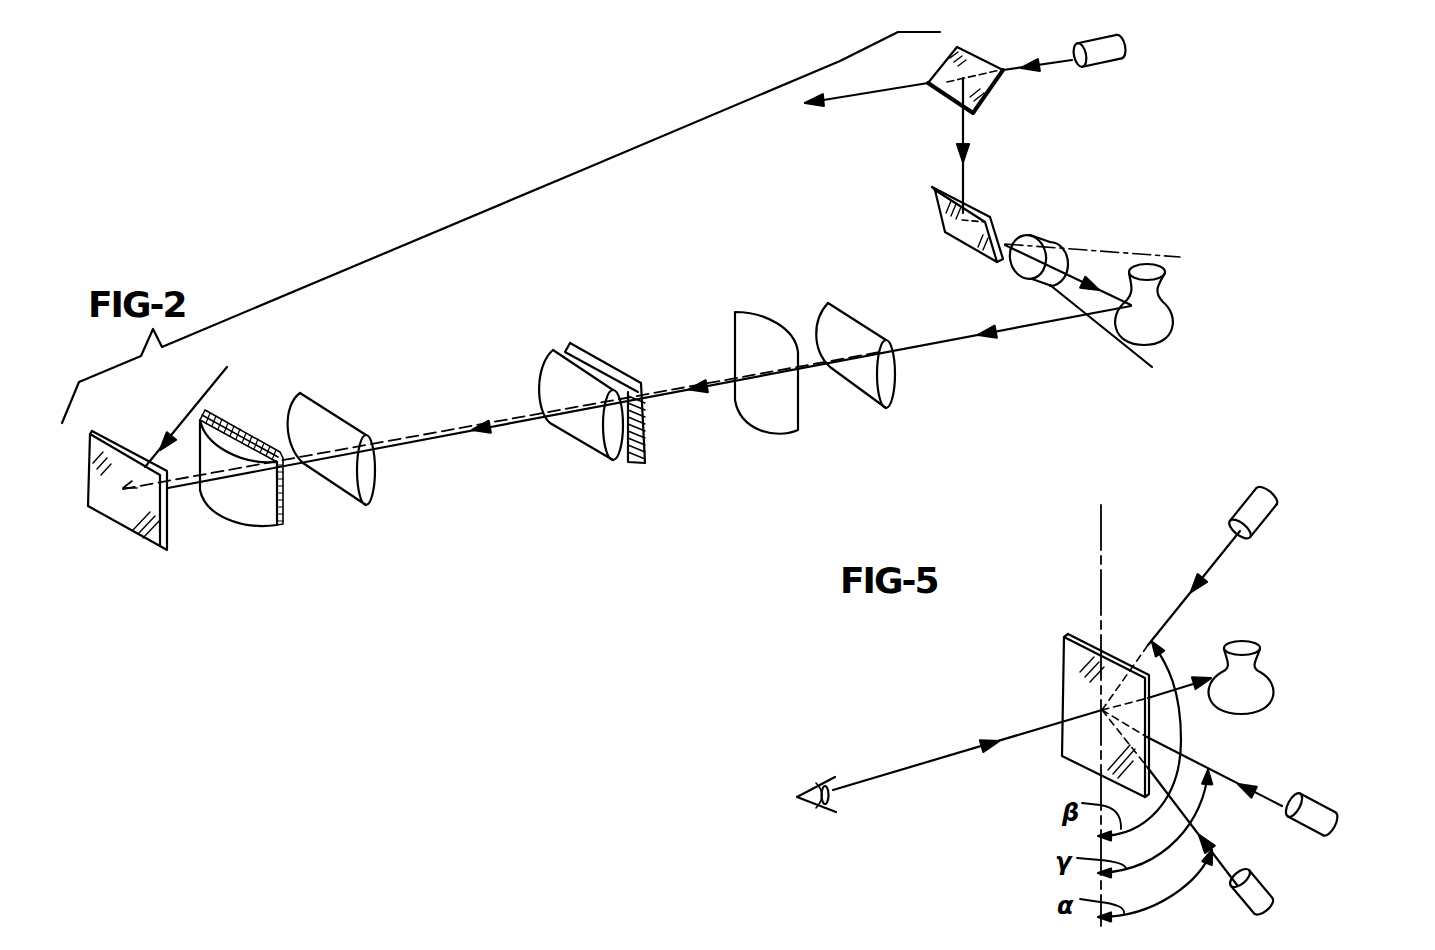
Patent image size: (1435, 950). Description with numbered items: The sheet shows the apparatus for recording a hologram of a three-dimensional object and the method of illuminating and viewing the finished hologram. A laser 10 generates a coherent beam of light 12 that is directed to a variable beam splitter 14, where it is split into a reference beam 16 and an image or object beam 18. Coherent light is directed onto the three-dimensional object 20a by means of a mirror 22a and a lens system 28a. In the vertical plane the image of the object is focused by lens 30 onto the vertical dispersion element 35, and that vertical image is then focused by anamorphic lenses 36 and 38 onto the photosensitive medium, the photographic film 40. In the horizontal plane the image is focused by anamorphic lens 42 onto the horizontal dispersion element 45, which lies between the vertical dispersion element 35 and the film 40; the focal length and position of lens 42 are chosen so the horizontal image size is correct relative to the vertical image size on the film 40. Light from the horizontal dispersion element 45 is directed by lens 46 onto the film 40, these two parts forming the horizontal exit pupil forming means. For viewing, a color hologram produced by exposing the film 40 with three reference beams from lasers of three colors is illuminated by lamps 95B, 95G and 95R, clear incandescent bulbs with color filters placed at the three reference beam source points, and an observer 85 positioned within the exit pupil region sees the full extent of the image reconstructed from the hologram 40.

In FIG. 2, the laser 10 is at (1107, 62).
In FIG. 2, the coherent beam of light 12 is at (1008, 71).
In FIG. 2, the variable beam splitter 14 is at (937, 63).
In FIG. 2, the reference beam 16 is at (868, 95).
In FIG. 2, the image or object beam 18 is at (964, 134).
In FIG. 2, the mirror 22a is at (946, 221).
In FIG. 2, the lens system 28a is at (1073, 243).
In FIG. 2, the object 20a is at (1171, 326).
In FIG. 5, the object 20a is at (1266, 690).
In FIG. 2, the lens 30 is at (855, 328).
In FIG. 2, the anamorphic lens 42 is at (761, 314).
In FIG. 2, the vertical dispersion element 35 is at (605, 368).
In FIG. 2, the anamorphic lens 36 is at (544, 390).
In FIG. 2, the anamorphic lens 38 is at (338, 417).
In FIG. 2, the horizontal dispersion element 45 is at (243, 431).
In FIG. 2, the lens 46 is at (249, 517).
In FIG. 2, the photographic film 40 is at (144, 532).
In FIG. 5, the photographic film 40 is at (1062, 700).
In FIG. 5, the observer 85 is at (805, 797).
In FIG. 5, the lamp 95B is at (1269, 495).
In FIG. 5, the lamp 95G is at (1324, 811).
In FIG. 5, the lamp 95R is at (1263, 893).